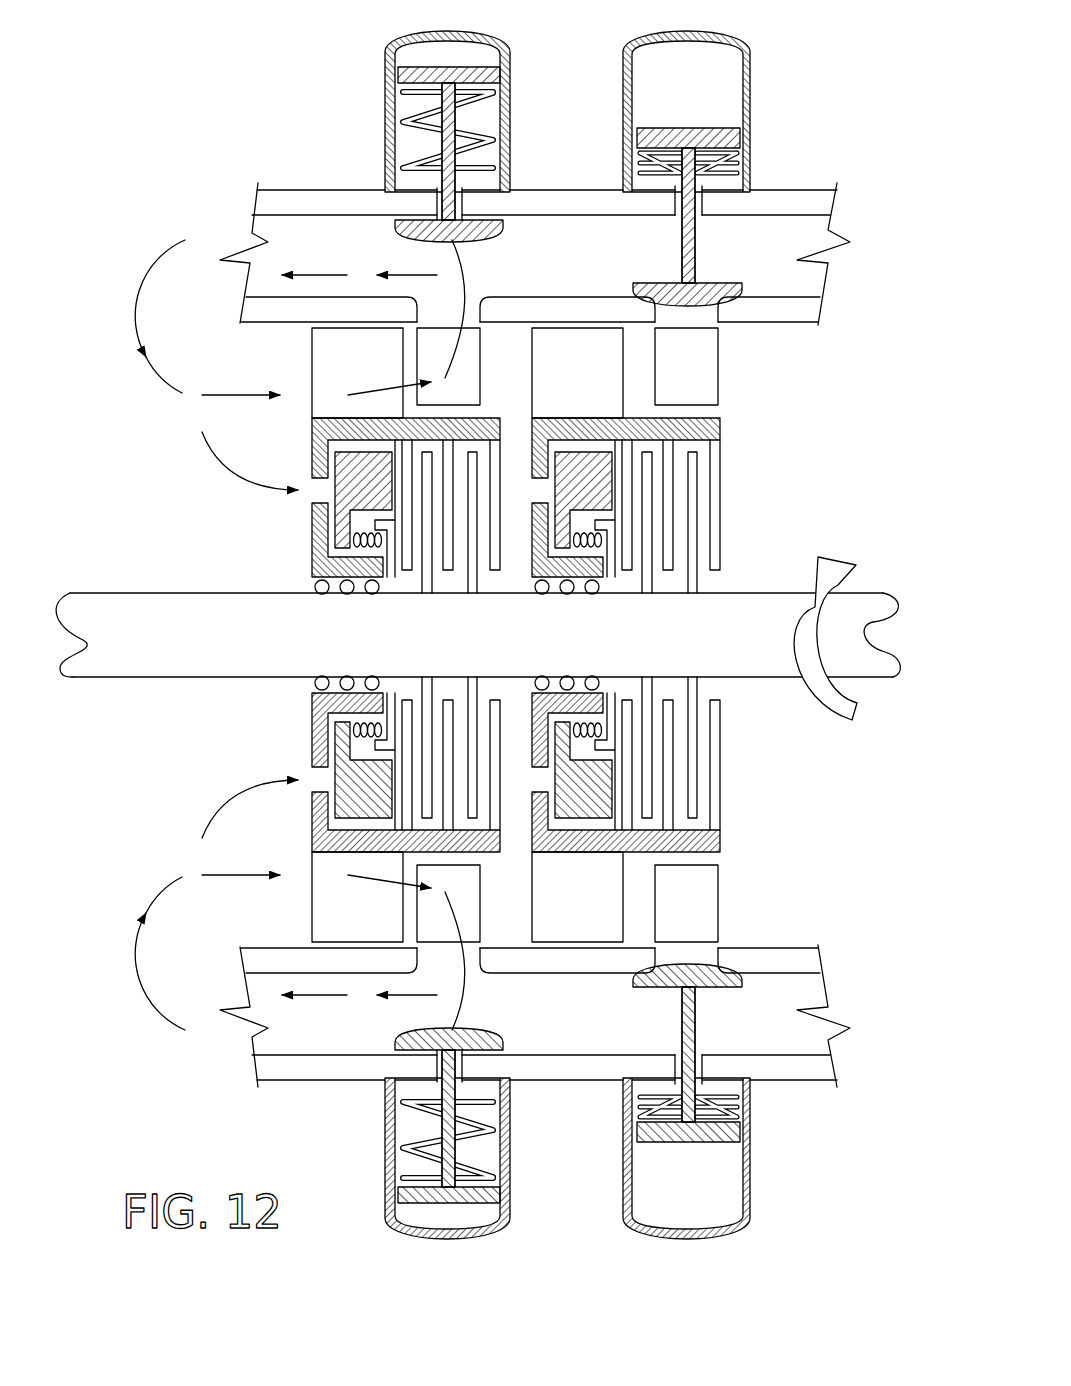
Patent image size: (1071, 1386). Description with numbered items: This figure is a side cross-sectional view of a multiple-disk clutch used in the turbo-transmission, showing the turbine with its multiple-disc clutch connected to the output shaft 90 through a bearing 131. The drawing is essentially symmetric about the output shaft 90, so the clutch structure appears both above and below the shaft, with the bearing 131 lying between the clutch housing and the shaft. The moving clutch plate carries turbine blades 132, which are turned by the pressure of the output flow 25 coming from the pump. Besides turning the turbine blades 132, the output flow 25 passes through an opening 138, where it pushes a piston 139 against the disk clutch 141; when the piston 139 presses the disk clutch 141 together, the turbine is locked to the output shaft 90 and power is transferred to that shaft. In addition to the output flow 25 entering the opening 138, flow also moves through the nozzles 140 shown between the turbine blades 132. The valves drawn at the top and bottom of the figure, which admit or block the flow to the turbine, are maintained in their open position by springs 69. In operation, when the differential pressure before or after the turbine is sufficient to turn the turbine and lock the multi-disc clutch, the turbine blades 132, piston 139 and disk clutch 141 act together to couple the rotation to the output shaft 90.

The output flow 25 is at (215, 397).
The spring 69 is at (748, 148).
The output shaft 90 is at (95, 593).
The bearing 131 is at (313, 582).
The turbine blades 132 is at (310, 360).
The opening 138 is at (313, 513).
The piston 139 is at (310, 445).
The nozzle 140 is at (482, 337).
The disk clutch 141 is at (408, 468).